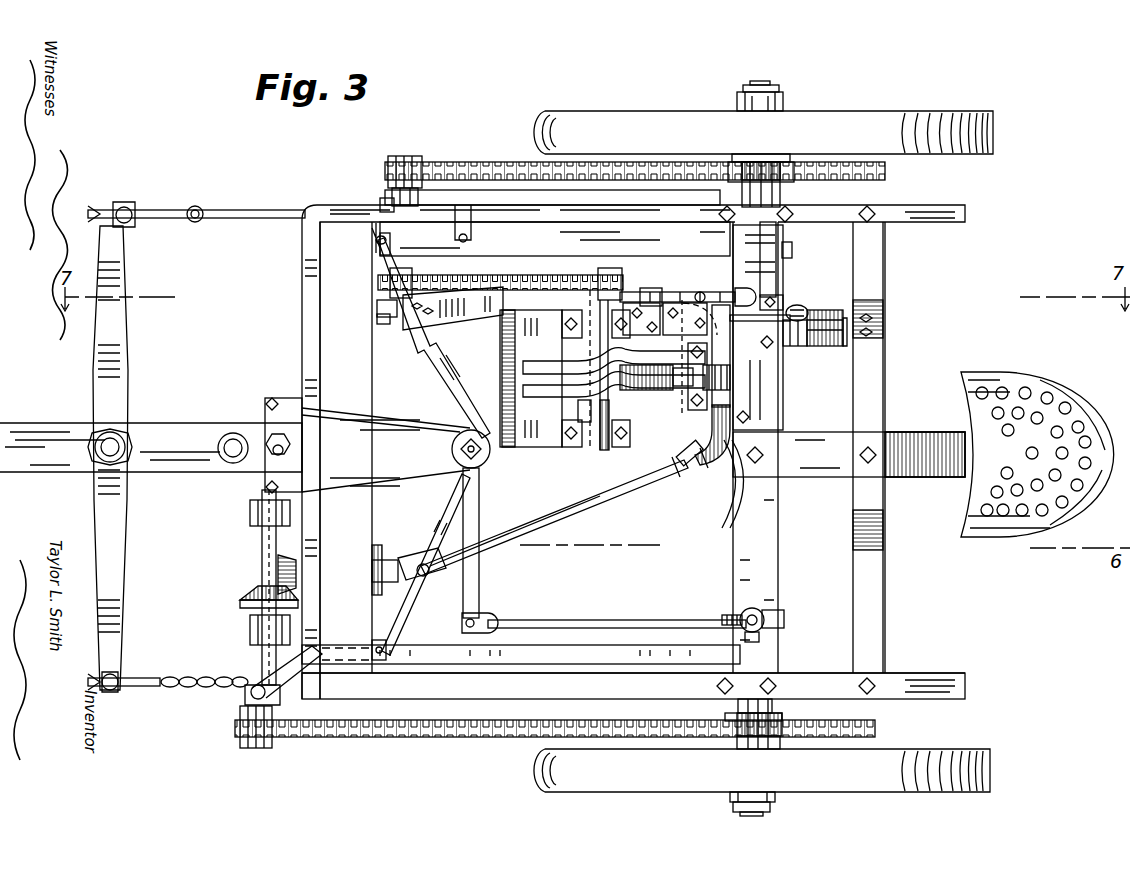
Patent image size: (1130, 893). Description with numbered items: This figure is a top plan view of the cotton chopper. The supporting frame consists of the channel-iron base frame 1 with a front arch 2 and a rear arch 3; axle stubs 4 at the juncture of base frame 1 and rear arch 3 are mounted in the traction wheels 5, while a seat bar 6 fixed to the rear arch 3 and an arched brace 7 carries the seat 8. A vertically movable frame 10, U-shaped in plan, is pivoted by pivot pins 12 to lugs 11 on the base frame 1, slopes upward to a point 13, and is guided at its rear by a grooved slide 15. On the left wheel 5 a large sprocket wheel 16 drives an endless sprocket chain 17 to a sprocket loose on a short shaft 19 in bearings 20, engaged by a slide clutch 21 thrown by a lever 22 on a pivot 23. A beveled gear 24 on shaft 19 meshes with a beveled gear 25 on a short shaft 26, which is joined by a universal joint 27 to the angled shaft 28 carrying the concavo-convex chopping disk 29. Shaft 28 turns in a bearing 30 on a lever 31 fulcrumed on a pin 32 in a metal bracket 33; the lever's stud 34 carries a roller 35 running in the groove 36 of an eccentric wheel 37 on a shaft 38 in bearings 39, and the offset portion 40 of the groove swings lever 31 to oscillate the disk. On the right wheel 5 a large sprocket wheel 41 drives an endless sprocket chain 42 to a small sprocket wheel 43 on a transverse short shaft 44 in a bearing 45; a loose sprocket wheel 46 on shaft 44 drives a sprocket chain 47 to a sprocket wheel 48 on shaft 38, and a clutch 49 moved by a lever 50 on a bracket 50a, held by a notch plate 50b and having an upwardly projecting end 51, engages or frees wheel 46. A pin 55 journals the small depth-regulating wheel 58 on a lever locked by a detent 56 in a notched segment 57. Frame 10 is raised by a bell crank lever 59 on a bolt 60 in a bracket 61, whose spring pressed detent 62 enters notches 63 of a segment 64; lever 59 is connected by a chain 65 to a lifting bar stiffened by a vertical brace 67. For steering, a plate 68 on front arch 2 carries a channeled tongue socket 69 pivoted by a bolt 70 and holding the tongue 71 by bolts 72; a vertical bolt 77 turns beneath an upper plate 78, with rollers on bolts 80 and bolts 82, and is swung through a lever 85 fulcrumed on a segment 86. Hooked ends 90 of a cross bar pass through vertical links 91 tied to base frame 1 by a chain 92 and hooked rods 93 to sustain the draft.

The base frame 1 is at (455, 712).
The front arch 2 is at (335, 338).
The rear arch 3 is at (770, 555).
The axle stubs 4 is at (766, 86).
The traction wheels 5 is at (993, 125).
The seat bar 6 is at (826, 442).
The arched brace 7 is at (884, 520).
The seat 8 is at (1030, 373).
The vertically movable frame 10 is at (530, 448).
The lugs 11 is at (385, 324).
The pivot pins 12 is at (394, 318).
The point 13 is at (505, 300).
The grooved slide 15 is at (705, 373).
The large sprocket wheel 16 is at (250, 732).
The endless sprocket chain 17 is at (446, 738).
The short shaft 19 is at (260, 544).
The bearings 20 is at (262, 512).
The slide clutch 21 is at (250, 696).
The lever 22 is at (626, 662).
The pivot 23 is at (378, 658).
The beveled gear 24 is at (244, 604).
The beveled gear 25 is at (278, 572).
The short shaft 26 is at (400, 560).
The universal joint 27 is at (420, 582).
The shaft 28 is at (600, 508).
The chopping disk 29 is at (728, 488).
The bearing 30 is at (688, 474).
The lever 31 is at (695, 445).
The pin 32 is at (626, 331).
The metal bracket 33 is at (683, 386).
The stud 34 is at (660, 390).
The roller 35 is at (668, 335).
The groove 36 is at (535, 390).
The eccentric wheel 37 is at (535, 366).
The shaft 38 is at (612, 447).
The bearings 39 is at (586, 338).
The offset portion of groove 40 is at (578, 404).
The large sprocket wheel 41 is at (886, 173).
The endless sprocket chain 42 is at (512, 164).
The small sprocket wheel 43 is at (388, 168).
The transverse short shaft 44 is at (418, 188).
The bearing 45 is at (380, 202).
The sprocket wheel 46 is at (500, 271).
The sprocket chain 47 is at (464, 276).
The sprocket wheel 48 is at (598, 275).
The clutch 49 is at (382, 244).
The lever 50 is at (637, 236).
The bracket 50a is at (468, 236).
The notch plate 50b is at (790, 230).
The upwardly projecting end 51 is at (792, 249).
The pin 55 is at (712, 292).
The detent 56 is at (697, 292).
The notched segment 57 is at (663, 288).
The small wheel 58 is at (825, 341).
The bell crank lever 59 is at (803, 308).
The bolt 60 is at (796, 341).
The bracket 61 is at (780, 298).
The spring pressed detent 62 is at (822, 312).
The notches 63 is at (846, 330).
The segment 64 is at (548, 612).
The chain 65 is at (470, 580).
The vertical brace 67 is at (762, 618).
The plate 68 is at (122, 352).
The channeled tongue socket 69 is at (115, 440).
The bolt 70 is at (288, 452).
The tongue 71 is at (56, 437).
The bolts 72 is at (233, 440).
The vertical bolt 77 is at (450, 449).
The upper plate 78 is at (380, 412).
The bolts 80 is at (270, 400).
The bolts 82 is at (465, 418).
The lever 85 is at (765, 614).
The segment 86 is at (722, 620).
The hooked ends 90 is at (120, 205).
The vertical links 91 is at (88, 676).
The chain 92 is at (192, 677).
The hooked rods 93 is at (195, 207).